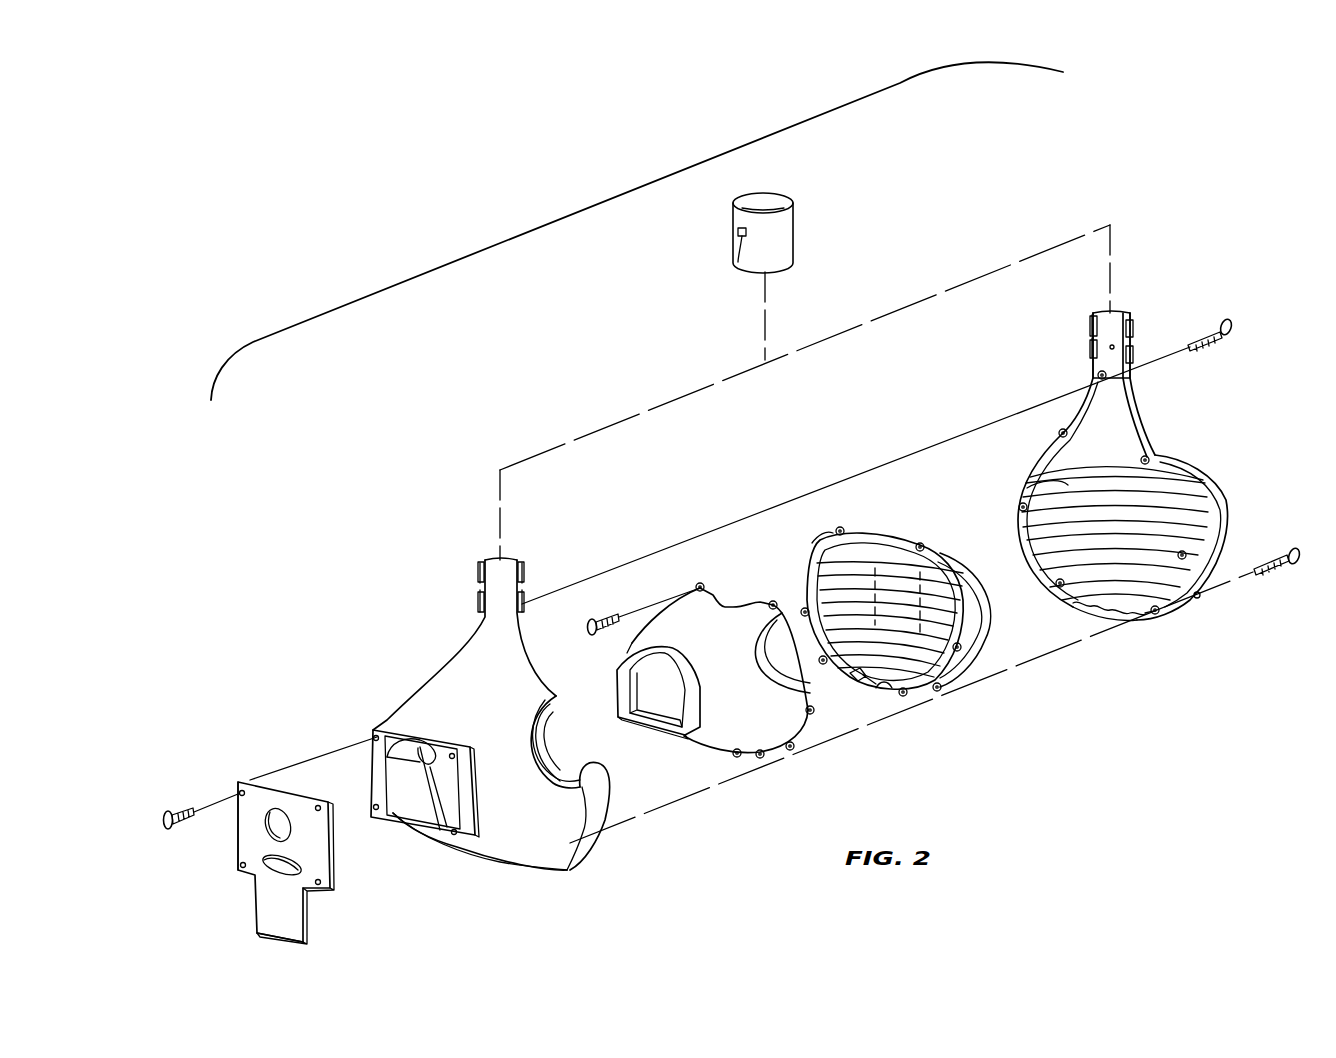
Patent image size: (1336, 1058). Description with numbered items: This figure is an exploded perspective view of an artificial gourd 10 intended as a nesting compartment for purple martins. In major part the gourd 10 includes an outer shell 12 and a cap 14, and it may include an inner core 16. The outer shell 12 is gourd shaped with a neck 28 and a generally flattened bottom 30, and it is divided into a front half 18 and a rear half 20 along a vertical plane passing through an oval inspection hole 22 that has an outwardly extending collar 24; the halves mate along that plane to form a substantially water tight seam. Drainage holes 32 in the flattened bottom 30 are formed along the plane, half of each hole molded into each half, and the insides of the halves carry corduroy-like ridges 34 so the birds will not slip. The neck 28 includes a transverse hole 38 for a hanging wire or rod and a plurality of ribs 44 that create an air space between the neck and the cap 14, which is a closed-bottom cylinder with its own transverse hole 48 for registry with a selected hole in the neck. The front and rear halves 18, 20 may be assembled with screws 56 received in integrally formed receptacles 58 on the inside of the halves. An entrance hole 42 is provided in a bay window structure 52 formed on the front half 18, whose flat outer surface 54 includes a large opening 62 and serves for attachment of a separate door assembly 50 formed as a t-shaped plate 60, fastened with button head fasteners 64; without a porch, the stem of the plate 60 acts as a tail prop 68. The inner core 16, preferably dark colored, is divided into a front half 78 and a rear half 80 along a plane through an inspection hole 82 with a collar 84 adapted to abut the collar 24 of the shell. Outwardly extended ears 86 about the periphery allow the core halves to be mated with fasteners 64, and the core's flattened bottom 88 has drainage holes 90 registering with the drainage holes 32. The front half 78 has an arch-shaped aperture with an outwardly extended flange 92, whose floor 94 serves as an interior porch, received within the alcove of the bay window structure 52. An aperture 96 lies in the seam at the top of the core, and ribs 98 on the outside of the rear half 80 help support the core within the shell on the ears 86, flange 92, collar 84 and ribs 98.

The artificial gourd 10 is at (656, 182).
The outer shell 12 is at (540, 443).
The cap 14 is at (795, 236).
The inner core 16 is at (742, 798).
The front half 18 is at (420, 675).
The rear half 20 is at (1160, 435).
The inspection hole 22 is at (574, 866).
The collar 24 is at (545, 830).
The neck 28 is at (483, 613).
The flattened bottom 30 is at (478, 860).
The drainage holes 32 is at (1078, 605).
The corduroy-like ridges 34 is at (833, 535).
The transverse hole 38 is at (1128, 338).
The entrance hole 42 is at (290, 855).
The ribs 44 is at (524, 590).
The transverse hole 48 is at (740, 236).
The door assembly 50 is at (331, 859).
The bay window structure 52 is at (462, 760).
The outer surface 54 is at (458, 750).
The screws 56 is at (1231, 323).
The receptacles 58 is at (1098, 375).
The t-shaped plate 60 is at (235, 858).
The large opening 62 is at (440, 750).
The button head fasteners 64 is at (175, 812).
The tail prop 68 is at (306, 935).
The front half 78 is at (630, 645).
The rear half 80 is at (968, 655).
The inspection hole 82 is at (772, 675).
The collar 84 is at (762, 685).
The ears 86 is at (701, 583).
The flattened bottom 88 is at (893, 690).
The drainage holes 90 is at (853, 676).
The flange 92 is at (693, 741).
The floor 94 is at (641, 736).
The aperture 96 is at (738, 603).
The ribs 98 is at (805, 600).